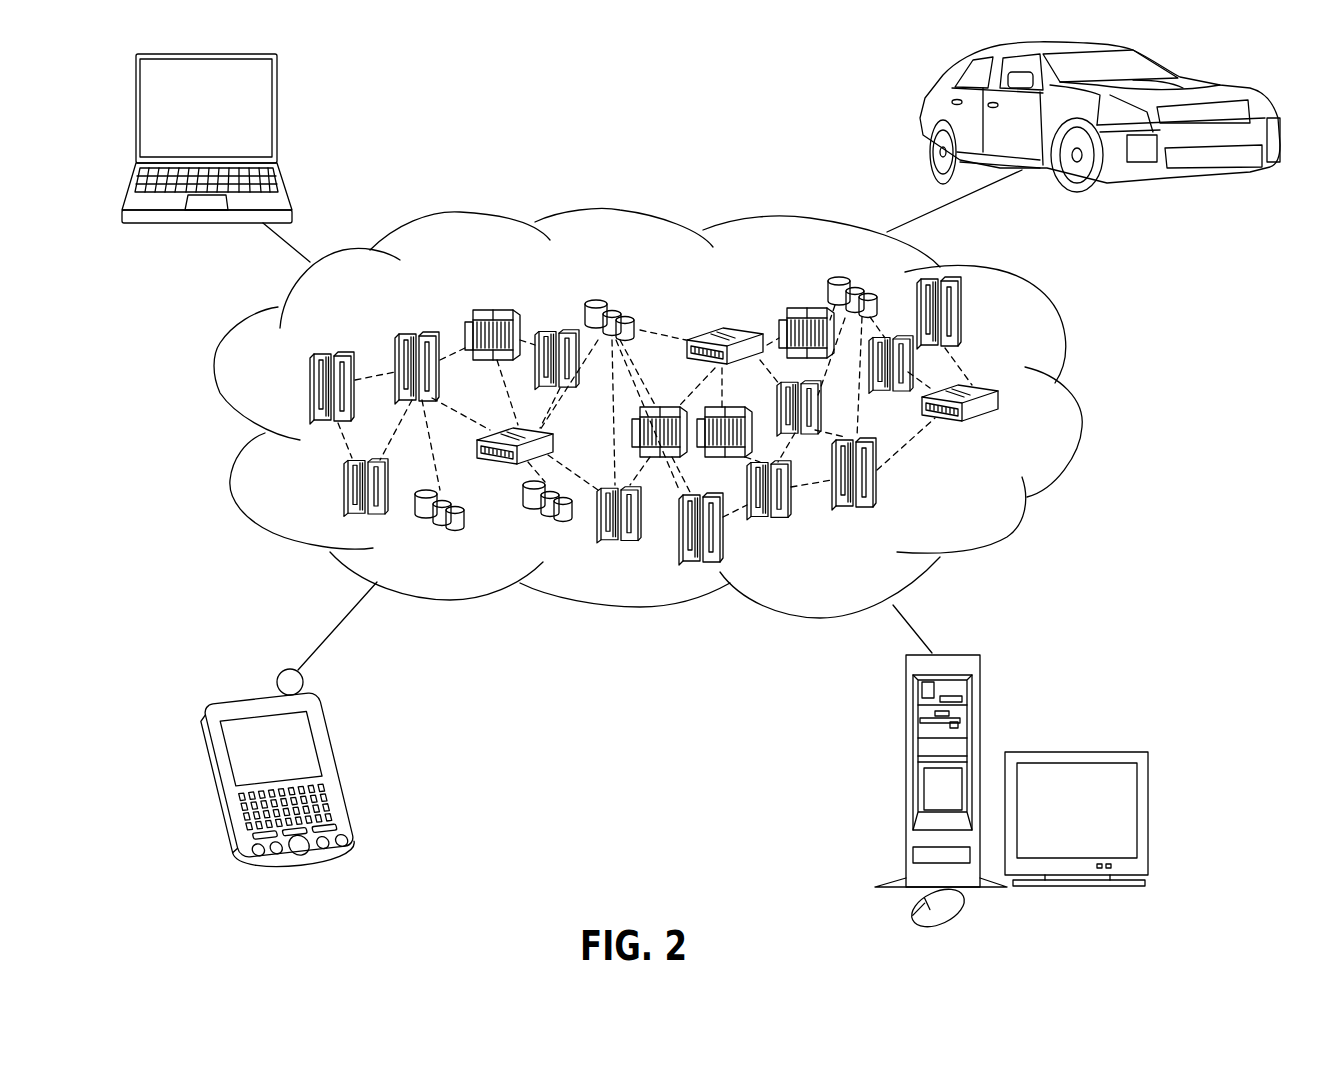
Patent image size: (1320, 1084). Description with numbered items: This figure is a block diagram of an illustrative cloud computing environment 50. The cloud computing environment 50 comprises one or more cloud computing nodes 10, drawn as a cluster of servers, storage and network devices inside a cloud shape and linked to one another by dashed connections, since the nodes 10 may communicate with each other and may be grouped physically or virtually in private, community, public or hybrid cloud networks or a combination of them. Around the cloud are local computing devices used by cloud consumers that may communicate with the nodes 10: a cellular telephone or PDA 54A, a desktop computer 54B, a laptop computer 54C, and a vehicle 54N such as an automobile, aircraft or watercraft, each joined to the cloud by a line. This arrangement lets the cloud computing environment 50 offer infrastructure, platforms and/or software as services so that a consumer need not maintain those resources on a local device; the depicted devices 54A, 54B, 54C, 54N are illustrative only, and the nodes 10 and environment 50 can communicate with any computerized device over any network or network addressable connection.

The cloud computing node 10 is at (983, 503).
The cloud computing environment 50 is at (1073, 400).
The cellular telephone or PDA 54A is at (332, 733).
The desktop computer 54B is at (904, 714).
The laptop computer 54C is at (277, 92).
The vehicle 54N is at (915, 105).